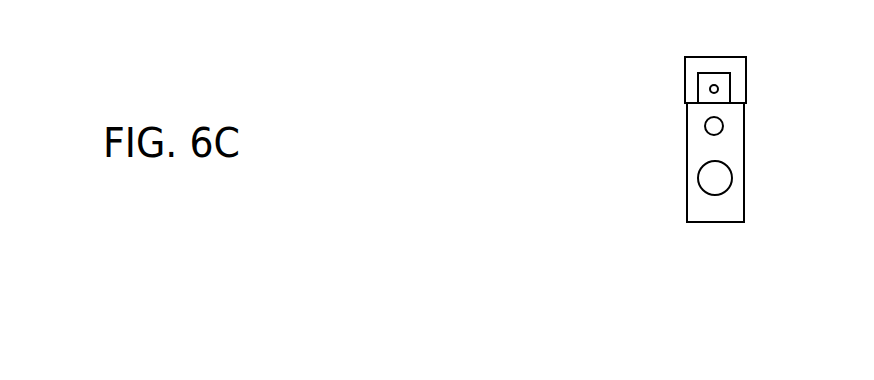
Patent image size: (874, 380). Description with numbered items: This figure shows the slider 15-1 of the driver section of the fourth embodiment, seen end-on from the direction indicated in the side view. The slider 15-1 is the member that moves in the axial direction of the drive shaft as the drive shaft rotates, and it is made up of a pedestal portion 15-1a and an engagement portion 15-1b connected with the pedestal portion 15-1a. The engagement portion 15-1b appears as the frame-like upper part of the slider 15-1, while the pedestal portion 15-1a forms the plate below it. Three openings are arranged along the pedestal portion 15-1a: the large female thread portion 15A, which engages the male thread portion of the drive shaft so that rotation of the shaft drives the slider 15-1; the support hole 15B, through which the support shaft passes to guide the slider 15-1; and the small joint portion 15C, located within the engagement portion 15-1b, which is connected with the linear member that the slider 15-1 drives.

The slider 15-1 is at (782, 100).
The pedestal portion 15-1a is at (744, 158).
The engagement portion 15-1b is at (705, 58).
The female thread portion 15A is at (699, 181).
The support hole 15B is at (706, 130).
The joint portion 15C is at (709, 91).